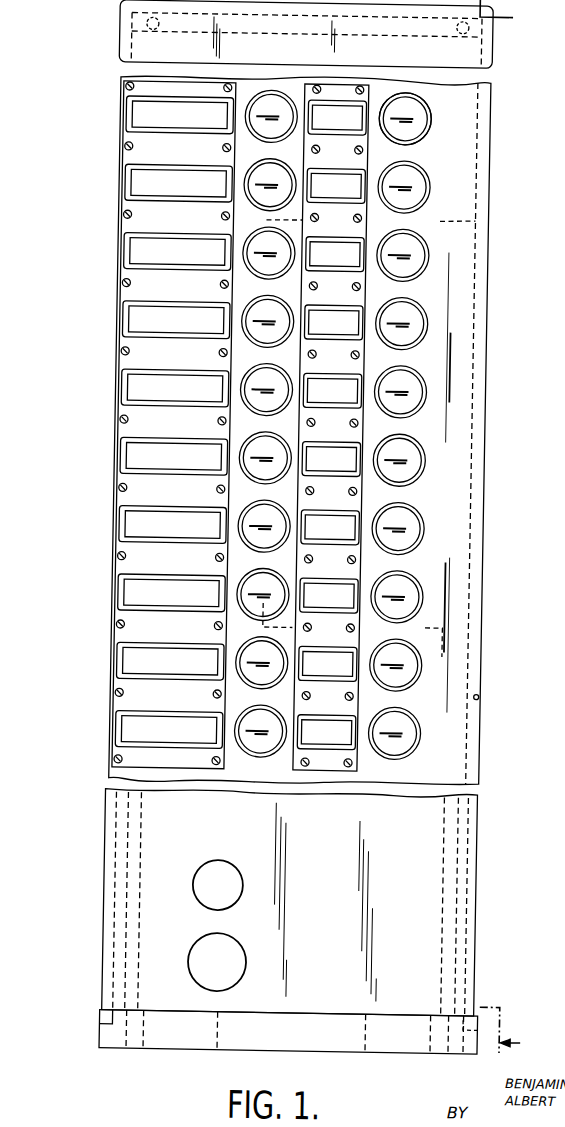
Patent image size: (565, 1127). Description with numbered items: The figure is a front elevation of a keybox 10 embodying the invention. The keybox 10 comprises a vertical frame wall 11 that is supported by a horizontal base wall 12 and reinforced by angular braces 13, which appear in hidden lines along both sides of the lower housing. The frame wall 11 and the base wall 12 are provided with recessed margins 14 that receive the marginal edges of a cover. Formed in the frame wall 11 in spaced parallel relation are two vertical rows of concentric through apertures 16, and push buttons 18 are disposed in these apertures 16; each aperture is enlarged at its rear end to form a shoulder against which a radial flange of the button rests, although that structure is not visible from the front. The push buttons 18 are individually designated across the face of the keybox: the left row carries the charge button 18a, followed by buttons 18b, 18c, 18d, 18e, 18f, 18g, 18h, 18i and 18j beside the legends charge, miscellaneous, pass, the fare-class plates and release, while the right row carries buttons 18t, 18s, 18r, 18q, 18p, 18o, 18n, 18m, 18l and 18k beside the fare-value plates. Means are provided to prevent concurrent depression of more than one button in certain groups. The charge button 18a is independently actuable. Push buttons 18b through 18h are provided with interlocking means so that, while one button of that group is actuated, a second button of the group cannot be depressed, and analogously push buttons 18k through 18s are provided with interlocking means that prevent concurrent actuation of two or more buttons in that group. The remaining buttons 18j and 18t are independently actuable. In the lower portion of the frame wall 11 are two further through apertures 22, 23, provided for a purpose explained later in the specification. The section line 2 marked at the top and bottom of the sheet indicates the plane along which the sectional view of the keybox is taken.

The section line 2- 2 is at (509, 530).
The keybox 10 is at (502, 358).
The vertical frame wall 11 is at (456, 759).
The horizontal base wall 12 is at (119, 1036).
The angular braces 13 is at (139, 915).
The recessed margins 14 is at (478, 972).
The through apertures 16 is at (414, 204).
The push buttons 18 is at (425, 135).
The charge button 18a is at (266, 94).
The push button 18b is at (266, 162).
The push button 18c is at (267, 228).
The push button 18d is at (266, 299).
The push button 18e is at (266, 367).
The push button 18f is at (266, 436).
The push button 18g is at (266, 504).
The push button 18h is at (266, 572).
The push button 18i is at (266, 640).
The push button 18j is at (266, 709).
The push button 18k is at (416, 731).
The push button 18l is at (414, 673).
The push button 18m is at (433, 570).
The push button 18n is at (422, 533).
The push button 18o is at (421, 472).
The push button 18p is at (421, 392).
The push button 18q is at (415, 315).
The push button 18r is at (409, 261).
The push button 18s is at (418, 198).
The push button 18t is at (418, 113).
The through aperture 22 is at (235, 874).
The through aperture 23 is at (239, 954).